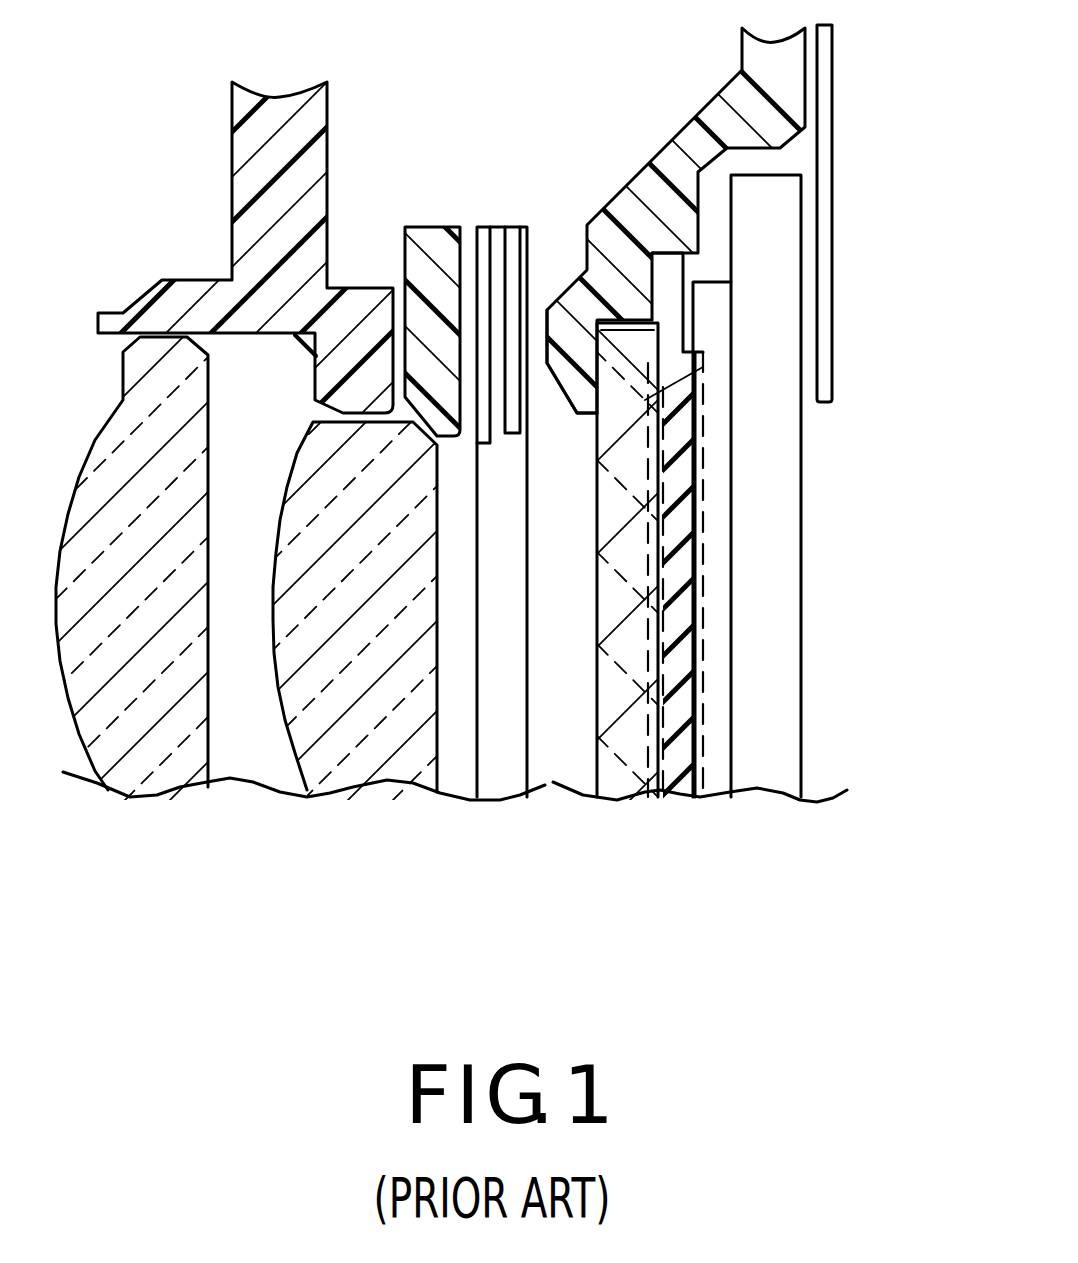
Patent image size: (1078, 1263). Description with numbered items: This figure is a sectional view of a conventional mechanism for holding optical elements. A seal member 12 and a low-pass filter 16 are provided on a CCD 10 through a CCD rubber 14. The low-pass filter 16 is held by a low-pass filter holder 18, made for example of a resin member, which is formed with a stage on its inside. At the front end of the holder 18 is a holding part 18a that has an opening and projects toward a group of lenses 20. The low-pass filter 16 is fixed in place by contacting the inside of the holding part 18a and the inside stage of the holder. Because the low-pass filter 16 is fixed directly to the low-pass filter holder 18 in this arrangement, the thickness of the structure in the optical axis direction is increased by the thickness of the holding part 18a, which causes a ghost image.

The CCD 10 is at (780, 688).
The seal member 12 is at (722, 506).
The CCD rubber 14 is at (665, 290).
The low-pass filter 16 is at (620, 770).
The low-pass filter holder 18 is at (650, 193).
The holding part 18a is at (566, 312).
The group of lenses 20 is at (353, 758).